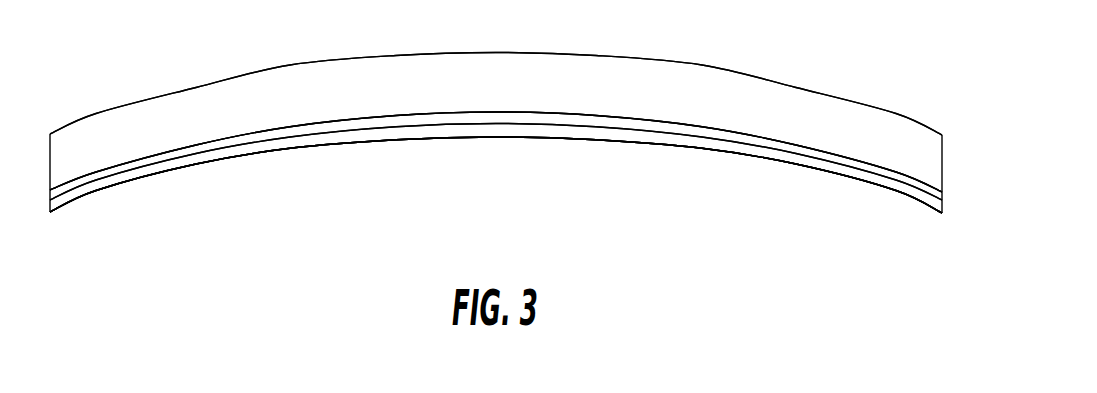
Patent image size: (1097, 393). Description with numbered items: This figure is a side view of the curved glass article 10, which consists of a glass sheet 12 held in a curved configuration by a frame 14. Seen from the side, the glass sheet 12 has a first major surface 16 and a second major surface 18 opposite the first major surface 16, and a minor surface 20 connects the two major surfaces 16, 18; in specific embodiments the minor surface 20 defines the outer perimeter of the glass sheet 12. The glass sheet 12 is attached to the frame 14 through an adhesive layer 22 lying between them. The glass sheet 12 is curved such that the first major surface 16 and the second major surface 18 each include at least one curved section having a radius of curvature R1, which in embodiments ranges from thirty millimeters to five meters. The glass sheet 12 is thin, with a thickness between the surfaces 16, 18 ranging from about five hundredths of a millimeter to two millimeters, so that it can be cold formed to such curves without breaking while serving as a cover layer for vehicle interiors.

The curved glass article 10 is at (152, 83).
The glass sheet 12 is at (652, 138).
The frame 14 is at (858, 123).
The first major surface 16 is at (282, 152).
The second major surface 18 is at (598, 125).
The minor surface 20 is at (790, 163).
The adhesive layer 22 is at (322, 125).
The radius of curvature R1 is at (495, 137).